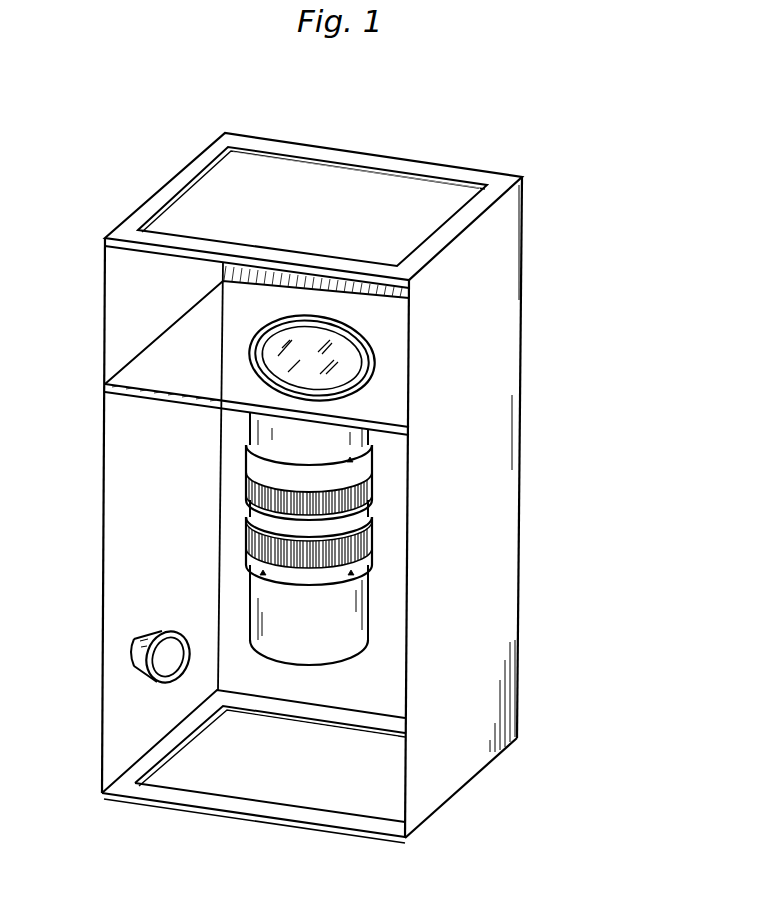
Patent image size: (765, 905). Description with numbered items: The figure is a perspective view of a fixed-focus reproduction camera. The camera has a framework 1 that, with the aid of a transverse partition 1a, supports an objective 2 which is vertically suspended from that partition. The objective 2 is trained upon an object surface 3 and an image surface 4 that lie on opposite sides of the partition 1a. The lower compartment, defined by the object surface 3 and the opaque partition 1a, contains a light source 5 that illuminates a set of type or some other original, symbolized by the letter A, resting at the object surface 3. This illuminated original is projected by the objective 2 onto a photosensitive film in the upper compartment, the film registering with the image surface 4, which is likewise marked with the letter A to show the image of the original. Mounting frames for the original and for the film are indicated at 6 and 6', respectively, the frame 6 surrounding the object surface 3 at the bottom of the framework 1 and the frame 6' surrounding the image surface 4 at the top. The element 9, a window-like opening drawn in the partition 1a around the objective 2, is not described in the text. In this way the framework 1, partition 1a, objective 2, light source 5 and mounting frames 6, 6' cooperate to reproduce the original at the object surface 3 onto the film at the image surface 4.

The framework 1 is at (503, 356).
The transverse partition 1a is at (145, 368).
The objective 2 is at (366, 448).
The object surface 3 is at (327, 773).
The image surface 4 is at (419, 190).
The light source 5 is at (132, 657).
The mounting frame for the original 6 is at (232, 764).
The mounting frame for the film 6' is at (311, 203).
The lens window 9 is at (257, 351).